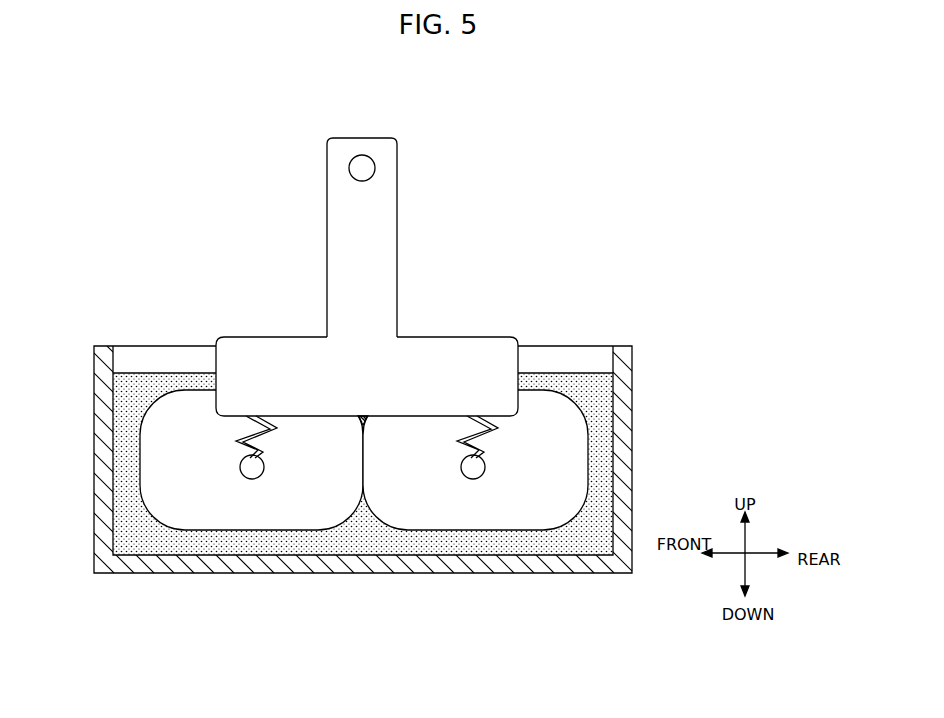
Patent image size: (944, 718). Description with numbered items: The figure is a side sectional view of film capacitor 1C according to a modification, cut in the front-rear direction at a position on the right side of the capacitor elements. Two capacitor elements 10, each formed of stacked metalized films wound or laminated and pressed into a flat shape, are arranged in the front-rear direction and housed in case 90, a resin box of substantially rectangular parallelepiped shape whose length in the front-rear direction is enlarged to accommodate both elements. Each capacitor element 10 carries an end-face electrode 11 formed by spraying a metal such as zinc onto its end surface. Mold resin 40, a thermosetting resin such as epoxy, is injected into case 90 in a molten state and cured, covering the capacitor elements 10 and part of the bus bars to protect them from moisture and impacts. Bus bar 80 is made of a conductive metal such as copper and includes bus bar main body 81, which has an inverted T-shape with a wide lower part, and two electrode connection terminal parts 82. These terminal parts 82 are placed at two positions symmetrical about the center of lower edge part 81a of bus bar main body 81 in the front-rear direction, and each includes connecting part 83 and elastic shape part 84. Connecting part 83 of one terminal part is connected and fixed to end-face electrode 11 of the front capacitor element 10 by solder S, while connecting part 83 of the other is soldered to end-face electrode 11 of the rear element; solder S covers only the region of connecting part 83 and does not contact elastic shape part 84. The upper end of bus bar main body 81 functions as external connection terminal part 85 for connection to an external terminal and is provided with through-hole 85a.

The film capacitor 1C is at (130, 186).
The capacitor element 10 is at (260, 532).
The end-face electrode 11 is at (180, 418).
The mold resin 40 is at (563, 372).
The bus bar 80 is at (367, 258).
The bus bar main body 81 is at (397, 238).
The lower edge part 81a is at (236, 424).
The electrode connection terminal part 82 is at (291, 462).
The connecting part 83 is at (314, 448).
The elastic shape part 84 is at (255, 440).
The external connection terminal part 85 is at (365, 136).
The through-hole 85a is at (346, 158).
The case 90 is at (633, 478).
The solder S is at (247, 482).